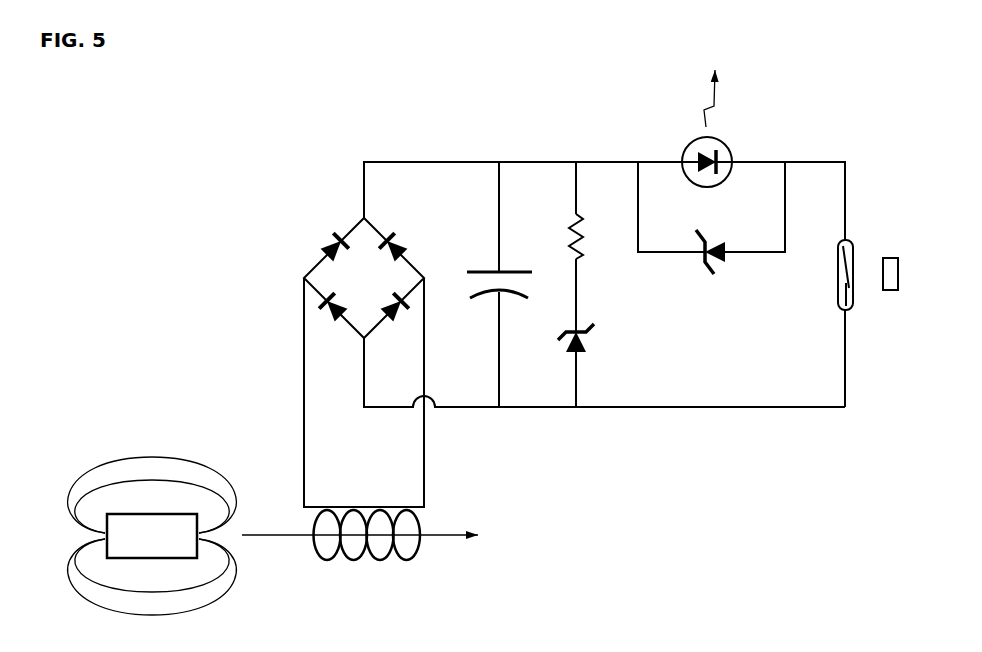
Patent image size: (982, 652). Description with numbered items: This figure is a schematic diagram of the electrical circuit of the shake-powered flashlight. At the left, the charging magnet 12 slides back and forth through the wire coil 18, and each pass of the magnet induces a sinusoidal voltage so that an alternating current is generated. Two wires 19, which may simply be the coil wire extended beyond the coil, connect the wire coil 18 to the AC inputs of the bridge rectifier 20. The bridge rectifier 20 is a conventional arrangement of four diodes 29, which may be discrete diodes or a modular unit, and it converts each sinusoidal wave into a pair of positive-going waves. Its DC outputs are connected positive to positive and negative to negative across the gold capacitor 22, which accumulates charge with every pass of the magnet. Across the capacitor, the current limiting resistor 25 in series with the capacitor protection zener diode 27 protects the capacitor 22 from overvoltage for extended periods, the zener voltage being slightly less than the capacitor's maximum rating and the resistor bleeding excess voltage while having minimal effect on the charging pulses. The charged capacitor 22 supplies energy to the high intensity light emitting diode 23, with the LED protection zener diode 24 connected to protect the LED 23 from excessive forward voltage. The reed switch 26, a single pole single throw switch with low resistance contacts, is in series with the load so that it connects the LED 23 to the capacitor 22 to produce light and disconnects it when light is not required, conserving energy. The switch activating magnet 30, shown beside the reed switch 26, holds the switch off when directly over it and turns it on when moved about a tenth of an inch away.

The charging magnet 12 is at (142, 500).
The wire coil 18 is at (365, 566).
The wires 19 is at (424, 432).
The bridge rectifier 20 is at (297, 280).
The gold capacitor 22 is at (468, 258).
The high intensity light emitting diode 23 is at (682, 142).
The LED protection zener diode 24 is at (723, 280).
The current limiting resistor 25 is at (566, 222).
The reed switch 26 is at (853, 313).
The capacitor protection zener diode 27 is at (591, 342).
The diodes 29 is at (324, 236).
The switch activating magnet 30 is at (888, 252).